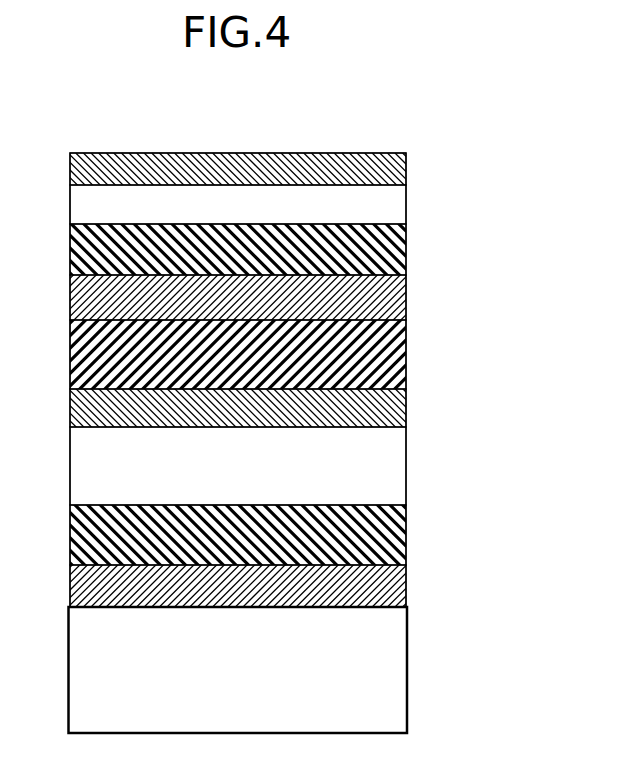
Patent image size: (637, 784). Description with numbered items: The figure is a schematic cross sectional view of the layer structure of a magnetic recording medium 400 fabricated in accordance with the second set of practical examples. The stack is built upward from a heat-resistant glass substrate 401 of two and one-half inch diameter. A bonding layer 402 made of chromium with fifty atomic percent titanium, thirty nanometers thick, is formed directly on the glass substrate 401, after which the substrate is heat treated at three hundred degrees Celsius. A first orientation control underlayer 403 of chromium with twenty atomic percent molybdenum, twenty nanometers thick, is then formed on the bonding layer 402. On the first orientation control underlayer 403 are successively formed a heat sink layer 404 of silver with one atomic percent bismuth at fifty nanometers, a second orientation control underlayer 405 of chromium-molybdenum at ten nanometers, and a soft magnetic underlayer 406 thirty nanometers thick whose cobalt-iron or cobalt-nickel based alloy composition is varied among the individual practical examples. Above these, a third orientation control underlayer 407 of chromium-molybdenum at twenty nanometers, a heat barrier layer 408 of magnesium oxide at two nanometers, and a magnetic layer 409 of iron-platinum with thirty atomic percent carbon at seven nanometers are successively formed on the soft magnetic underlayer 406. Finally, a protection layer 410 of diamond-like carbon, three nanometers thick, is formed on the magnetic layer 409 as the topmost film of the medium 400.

The magnetic recording medium 400 is at (93, 115).
The heat-resistant glass substrate 401 is at (395, 670).
The bonding layer 402 is at (395, 589).
The first orientation control underlayer 403 is at (395, 539).
The heat sink layer 404 is at (395, 467).
The second orientation control underlayer 405 is at (395, 410).
The soft magnetic underlayer 406 is at (395, 357).
The third orientation control underlayer 407 is at (393, 298).
The heat barrier layer 408 is at (395, 252).
The magnetic layer 409 is at (395, 206).
The protection layer 410 is at (395, 172).